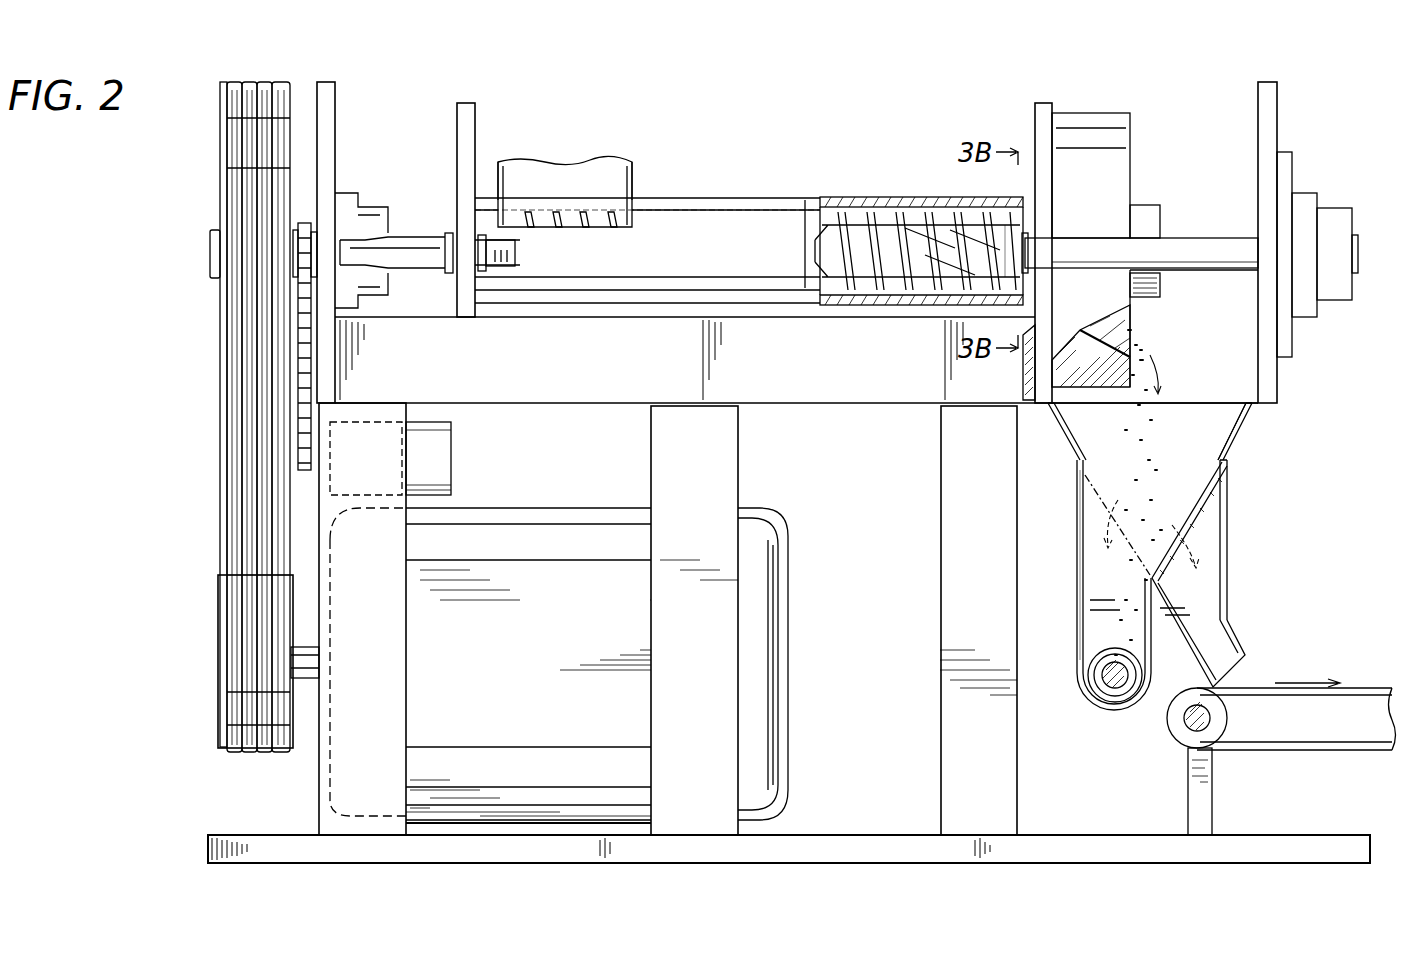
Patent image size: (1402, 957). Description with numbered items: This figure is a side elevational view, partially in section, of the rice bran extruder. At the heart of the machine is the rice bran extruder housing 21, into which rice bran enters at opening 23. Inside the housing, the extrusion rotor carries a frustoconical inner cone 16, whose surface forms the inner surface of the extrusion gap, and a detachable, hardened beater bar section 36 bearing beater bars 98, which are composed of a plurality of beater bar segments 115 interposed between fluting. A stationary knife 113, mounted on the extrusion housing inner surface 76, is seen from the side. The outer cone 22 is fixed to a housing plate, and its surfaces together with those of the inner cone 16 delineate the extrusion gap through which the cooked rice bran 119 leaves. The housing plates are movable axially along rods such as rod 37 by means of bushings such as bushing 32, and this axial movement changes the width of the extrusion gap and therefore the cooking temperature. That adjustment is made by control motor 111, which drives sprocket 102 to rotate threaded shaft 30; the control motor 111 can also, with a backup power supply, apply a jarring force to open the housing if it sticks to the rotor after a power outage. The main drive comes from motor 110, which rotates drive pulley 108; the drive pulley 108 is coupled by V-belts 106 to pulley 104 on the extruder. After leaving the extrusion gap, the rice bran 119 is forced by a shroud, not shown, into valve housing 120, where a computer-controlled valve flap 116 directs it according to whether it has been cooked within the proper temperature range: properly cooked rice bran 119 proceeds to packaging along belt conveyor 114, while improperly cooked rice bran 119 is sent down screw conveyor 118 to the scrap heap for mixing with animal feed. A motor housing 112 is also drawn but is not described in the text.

The inner cone 16 is at (1120, 330).
The rice bran extruder housing 21 is at (712, 215).
The outer cone 22 is at (1040, 365).
The opening 23 is at (565, 185).
The threaded shaft 30 is at (410, 245).
The bushing 32 is at (447, 272).
The beater bar section 36 is at (880, 240).
The rod 37 is at (1100, 250).
The extrusion housing inner surface 76 is at (858, 210).
The beater bars 98 is at (940, 225).
The sprocket 102 is at (305, 232).
The pulley 104 is at (220, 325).
The V-belts 106 is at (220, 490).
The drive pulley 108 is at (220, 648).
The motor 110 is at (495, 797).
The control motor 111 is at (440, 458).
The motor housing 112 is at (697, 800).
The stationary knife 113 is at (880, 295).
The belt conveyor 114 is at (1355, 688).
The beater bar segments 115 is at (945, 290).
The valve flap 116 is at (1200, 510).
The screw conveyor 118 is at (1105, 700).
The rice bran 119 is at (1165, 420).
The valve housing 120 is at (1240, 430).